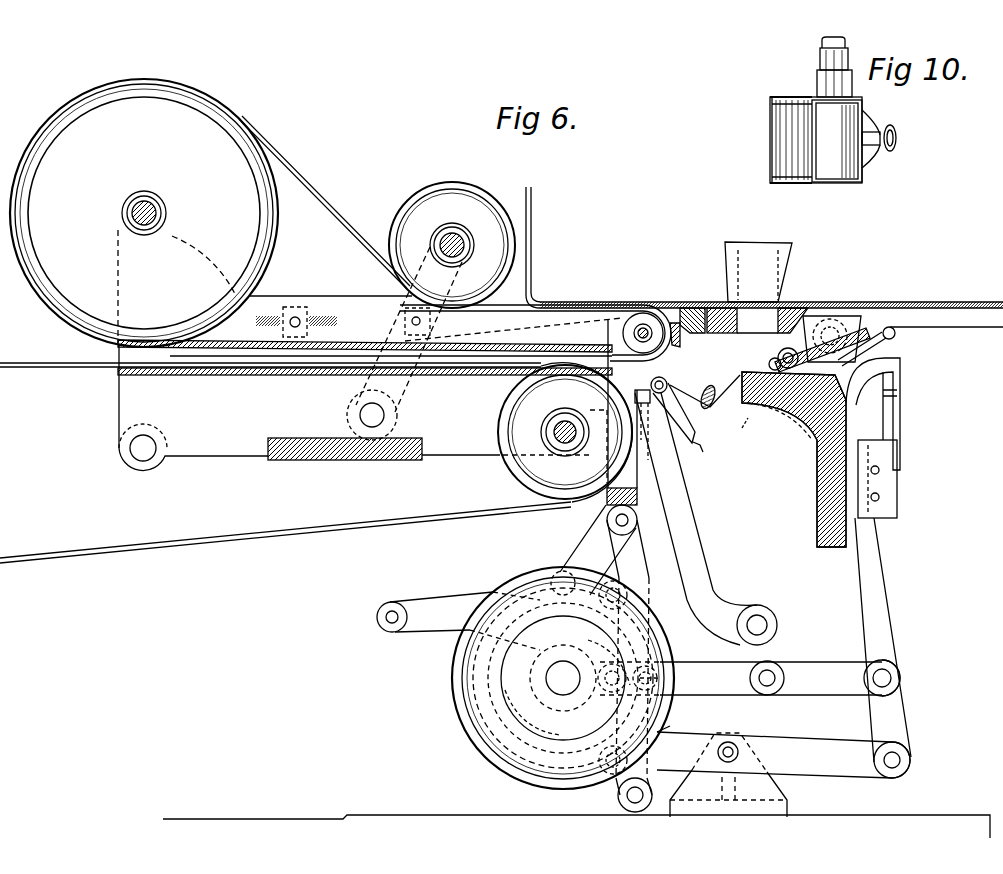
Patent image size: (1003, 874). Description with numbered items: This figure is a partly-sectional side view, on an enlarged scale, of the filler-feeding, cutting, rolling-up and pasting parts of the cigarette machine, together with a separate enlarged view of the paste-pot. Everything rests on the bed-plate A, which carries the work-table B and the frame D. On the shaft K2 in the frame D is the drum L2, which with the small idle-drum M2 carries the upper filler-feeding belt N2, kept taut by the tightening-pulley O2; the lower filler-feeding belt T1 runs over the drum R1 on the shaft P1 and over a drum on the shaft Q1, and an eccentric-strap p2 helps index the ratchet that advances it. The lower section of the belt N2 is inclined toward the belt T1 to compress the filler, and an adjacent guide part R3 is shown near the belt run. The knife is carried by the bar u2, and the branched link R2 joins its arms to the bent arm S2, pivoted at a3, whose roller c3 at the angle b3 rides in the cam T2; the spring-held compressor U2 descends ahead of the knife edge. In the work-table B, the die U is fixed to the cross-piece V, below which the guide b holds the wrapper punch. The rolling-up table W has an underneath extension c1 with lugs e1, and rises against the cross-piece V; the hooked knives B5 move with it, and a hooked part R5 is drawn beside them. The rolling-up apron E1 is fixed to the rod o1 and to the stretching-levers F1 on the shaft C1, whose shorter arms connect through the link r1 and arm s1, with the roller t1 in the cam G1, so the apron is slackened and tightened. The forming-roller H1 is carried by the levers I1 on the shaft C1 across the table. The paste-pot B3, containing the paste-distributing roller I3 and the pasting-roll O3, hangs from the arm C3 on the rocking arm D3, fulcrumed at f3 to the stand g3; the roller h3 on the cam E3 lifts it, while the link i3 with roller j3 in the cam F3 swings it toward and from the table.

In FIG. 6, the drum L2 is at (144, 213).
In FIG. 6, the shaft K2 is at (139, 204).
In FIG. 6, the upper filler-feeding belt N2 is at (324, 204).
In FIG. 6, the tightening-pulley O2 is at (442, 182).
In FIG. 6, the bent arm S2 is at (256, 320).
In FIG. 6, the frame D is at (365, 405).
In FIG. 6, the eccentric-strap p2 is at (250, 376).
In FIG. 6, the lower filler-feeding belt T1 is at (213, 535).
In FIG. 6, the drum R1 is at (565, 432).
In FIG. 6, the shaft P1 is at (560, 452).
In FIG. 6, the work-table B is at (904, 306).
In FIG. 6, the spring-held compressor U2 is at (614, 300).
In FIG. 6, the belt loop R3 is at (600, 323).
In FIG. 6, the idle-drum M2 is at (646, 312).
In FIG. 6, the shaft Q1 is at (672, 322).
In FIG. 6, the bar u2 is at (690, 307).
In FIG. 6, the die U is at (757, 322).
In FIG. 6, the guide b is at (790, 252).
In FIG. 6, the cross-piece V is at (812, 313).
In FIG. 6, the paste-distributing roller I3 is at (820, 300).
In FIG. 10, the paste-distributing roller I3 is at (768, 150).
In FIG. 6, the paste-pot B3 is at (852, 318).
In FIG. 10, the paste-pot B3 is at (854, 141).
In FIG. 6, the underneath extension c1 is at (699, 390).
In FIG. 6, the rolling-up apron E1 is at (705, 389).
In FIG. 6, the forming-roller H1 is at (687, 418).
In FIG. 6, the rolling-up table W is at (742, 433).
In FIG. 6, the levers I1 is at (703, 465).
In FIG. 6, the stretching-levers F1 is at (690, 518).
In FIG. 6, the shaft C1 is at (762, 612).
In FIG. 6, the lugs e1 is at (816, 523).
In FIG. 6, the rod o1 is at (780, 427).
In FIG. 6, the hook R5 is at (893, 391).
In FIG. 6, the hooked knives B5 is at (898, 414).
In FIG. 6, the arm C3 is at (878, 586).
In FIG. 10, the arm C3 is at (816, 62).
In FIG. 6, the branched link R2 is at (608, 520).
In FIG. 6, the cam F3 is at (629, 657).
In FIG. 6, the roller h3 is at (522, 770).
In FIG. 6, the cam E3 is at (466, 752).
In FIG. 6, the cam T2 is at (453, 671).
In FIG. 6, the cam K is at (462, 716).
In FIG. 6, the roller c3 is at (563, 673).
In FIG. 6, the roller j3 is at (617, 687).
In FIG. 6, the cam G1 is at (610, 677).
In FIG. 6, the angle b3 is at (541, 568).
In FIG. 6, the pivot a3 is at (389, 601).
In FIG. 6, the roller t1 is at (692, 664).
In FIG. 6, the link i3 is at (804, 668).
In FIG. 6, the link r1 is at (673, 687).
In FIG. 6, the rocking arm D3 is at (805, 742).
In FIG. 6, the arm s1 is at (681, 717).
In FIG. 6, the fulcrum f3 is at (731, 745).
In FIG. 6, the stand g3 is at (786, 790).
In FIG. 6, the bed-plate A is at (245, 818).
In FIG. 10, the pasting-roll O3 is at (768, 122).